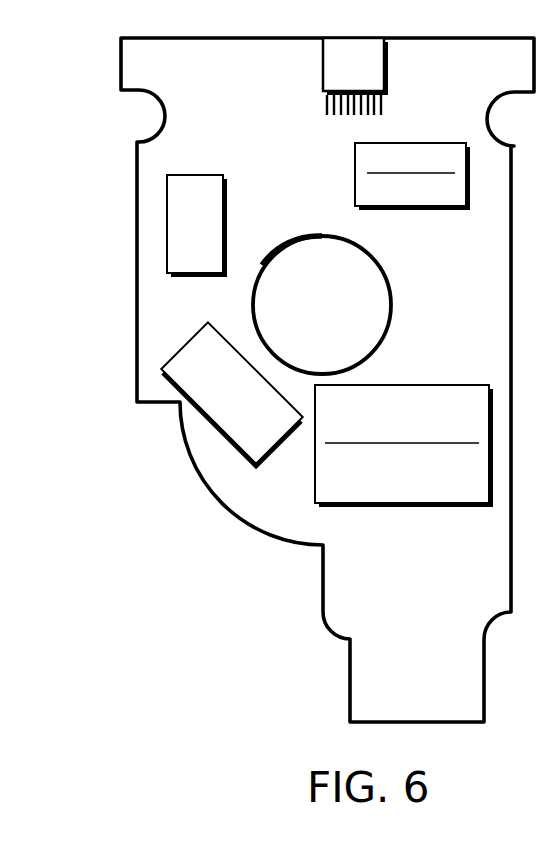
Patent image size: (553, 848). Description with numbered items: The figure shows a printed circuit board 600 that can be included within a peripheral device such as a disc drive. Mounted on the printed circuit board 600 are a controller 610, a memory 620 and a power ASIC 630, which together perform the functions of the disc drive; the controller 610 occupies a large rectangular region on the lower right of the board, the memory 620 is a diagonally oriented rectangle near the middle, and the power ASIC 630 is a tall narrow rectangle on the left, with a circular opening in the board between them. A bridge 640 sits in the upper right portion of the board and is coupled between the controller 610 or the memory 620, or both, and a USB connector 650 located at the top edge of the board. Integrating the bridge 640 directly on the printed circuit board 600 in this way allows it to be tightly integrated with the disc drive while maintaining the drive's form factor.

The printed circuit board 600 is at (215, 95).
The controller 610 is at (383, 471).
The memory 620 is at (231, 395).
The power ASIC 630 is at (220, 245).
The bridge 640 is at (392, 199).
The USB connector 650 is at (335, 86).